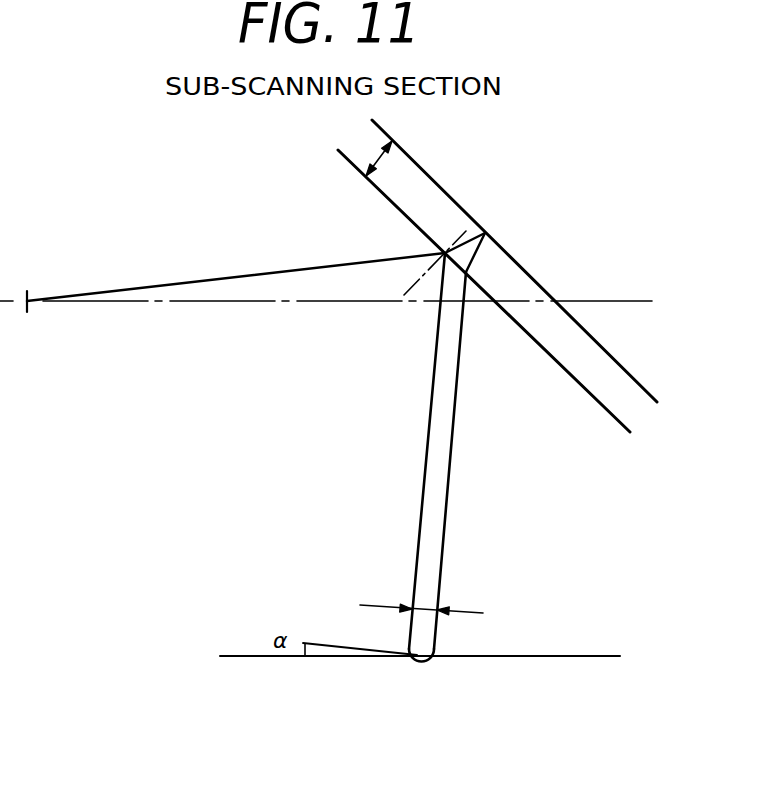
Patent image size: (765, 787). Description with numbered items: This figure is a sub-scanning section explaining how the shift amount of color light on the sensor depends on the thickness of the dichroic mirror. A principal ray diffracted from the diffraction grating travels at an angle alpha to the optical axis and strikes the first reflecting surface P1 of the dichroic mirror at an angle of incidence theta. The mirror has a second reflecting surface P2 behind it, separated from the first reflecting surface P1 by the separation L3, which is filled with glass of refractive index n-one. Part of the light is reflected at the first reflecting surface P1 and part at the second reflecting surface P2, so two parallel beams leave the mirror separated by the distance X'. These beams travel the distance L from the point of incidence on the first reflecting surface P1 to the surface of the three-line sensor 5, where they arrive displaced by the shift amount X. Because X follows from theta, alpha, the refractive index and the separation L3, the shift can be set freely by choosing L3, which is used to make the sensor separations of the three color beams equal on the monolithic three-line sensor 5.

The 3-line sensor 5 is at (563, 656).
The first reflecting surface P1 is at (492, 308).
The second reflecting surface P2 is at (524, 276).
The separation between the first reflecting surface and the second reflecting surfac L3 is at (370, 152).
The distance from the first reflecting surface to the surface of the 3-line sensor L is at (444, 447).
The shift amount of color light X is at (418, 677).
The separation between the color light beams reflected by the two reflecting surface X' is at (421, 595).